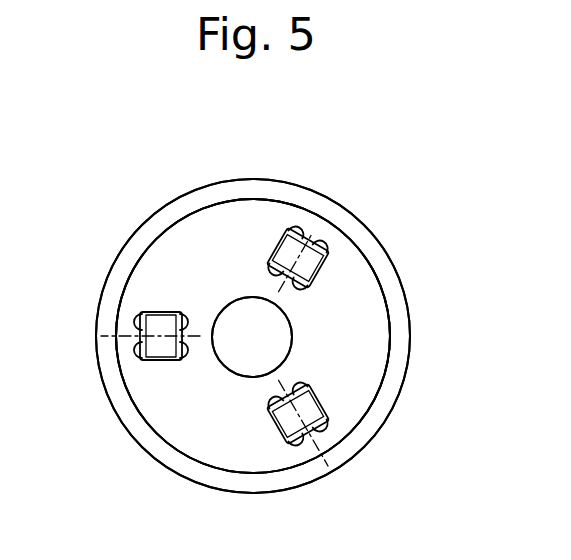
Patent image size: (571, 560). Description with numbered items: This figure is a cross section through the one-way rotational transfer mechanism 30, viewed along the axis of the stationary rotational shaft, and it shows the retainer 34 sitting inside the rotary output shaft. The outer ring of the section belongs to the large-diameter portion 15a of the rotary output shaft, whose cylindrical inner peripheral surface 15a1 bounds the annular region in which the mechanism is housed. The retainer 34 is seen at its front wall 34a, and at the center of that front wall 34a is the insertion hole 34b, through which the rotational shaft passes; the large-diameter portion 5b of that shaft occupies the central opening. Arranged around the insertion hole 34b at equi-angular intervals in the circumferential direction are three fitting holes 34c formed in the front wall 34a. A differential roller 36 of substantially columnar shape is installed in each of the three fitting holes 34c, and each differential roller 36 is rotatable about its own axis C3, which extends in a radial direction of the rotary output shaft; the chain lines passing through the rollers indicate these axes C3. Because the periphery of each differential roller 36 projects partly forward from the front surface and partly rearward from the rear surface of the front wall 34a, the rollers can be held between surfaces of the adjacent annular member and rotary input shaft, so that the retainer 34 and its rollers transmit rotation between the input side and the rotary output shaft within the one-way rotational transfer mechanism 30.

The one-way rotational transfer mechanism 30 is at (108, 203).
The retainer 34 is at (367, 362).
The front wall 34a is at (253, 336).
The insertion hole 34b is at (248, 300).
The fitting hole 34c is at (150, 362).
The differential roller 36 is at (137, 349).
The large-diameter portion 15a is at (113, 289).
The inner peripheral surface 15a1 is at (364, 282).
The large-diameter portion 5b is at (238, 361).
The axis C3 is at (138, 335).